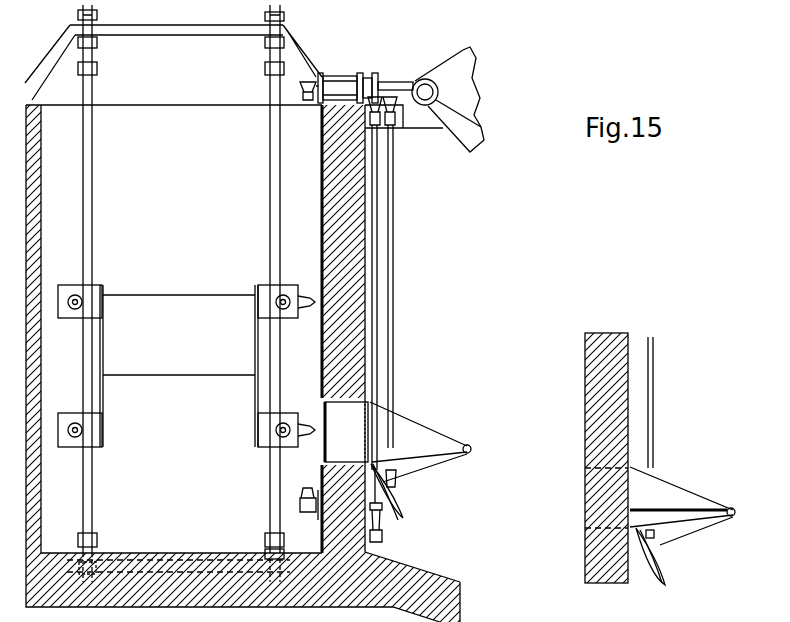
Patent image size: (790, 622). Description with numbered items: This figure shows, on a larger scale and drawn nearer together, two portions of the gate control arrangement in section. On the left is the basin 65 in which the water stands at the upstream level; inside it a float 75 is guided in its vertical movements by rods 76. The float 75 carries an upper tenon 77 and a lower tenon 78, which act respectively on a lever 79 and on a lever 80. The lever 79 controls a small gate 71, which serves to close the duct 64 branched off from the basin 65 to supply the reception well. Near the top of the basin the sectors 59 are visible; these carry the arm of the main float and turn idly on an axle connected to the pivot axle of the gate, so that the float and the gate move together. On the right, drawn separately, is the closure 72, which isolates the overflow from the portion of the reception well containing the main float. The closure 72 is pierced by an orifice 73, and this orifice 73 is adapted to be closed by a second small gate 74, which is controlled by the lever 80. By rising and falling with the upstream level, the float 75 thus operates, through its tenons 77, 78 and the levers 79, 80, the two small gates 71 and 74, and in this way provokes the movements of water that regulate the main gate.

The sectors 59 is at (450, 70).
The duct 64 is at (347, 427).
The basin 65 is at (183, 122).
The small gate 71 is at (402, 514).
The closure 72 is at (597, 357).
The orifice 73 is at (595, 492).
The small gate 74 is at (667, 573).
The float 75 is at (192, 360).
The rods 76 is at (88, 193).
The upper tenon 77 is at (311, 298).
The lower tenon 78 is at (311, 436).
The lever 79 is at (312, 98).
The lever 80 is at (305, 490).